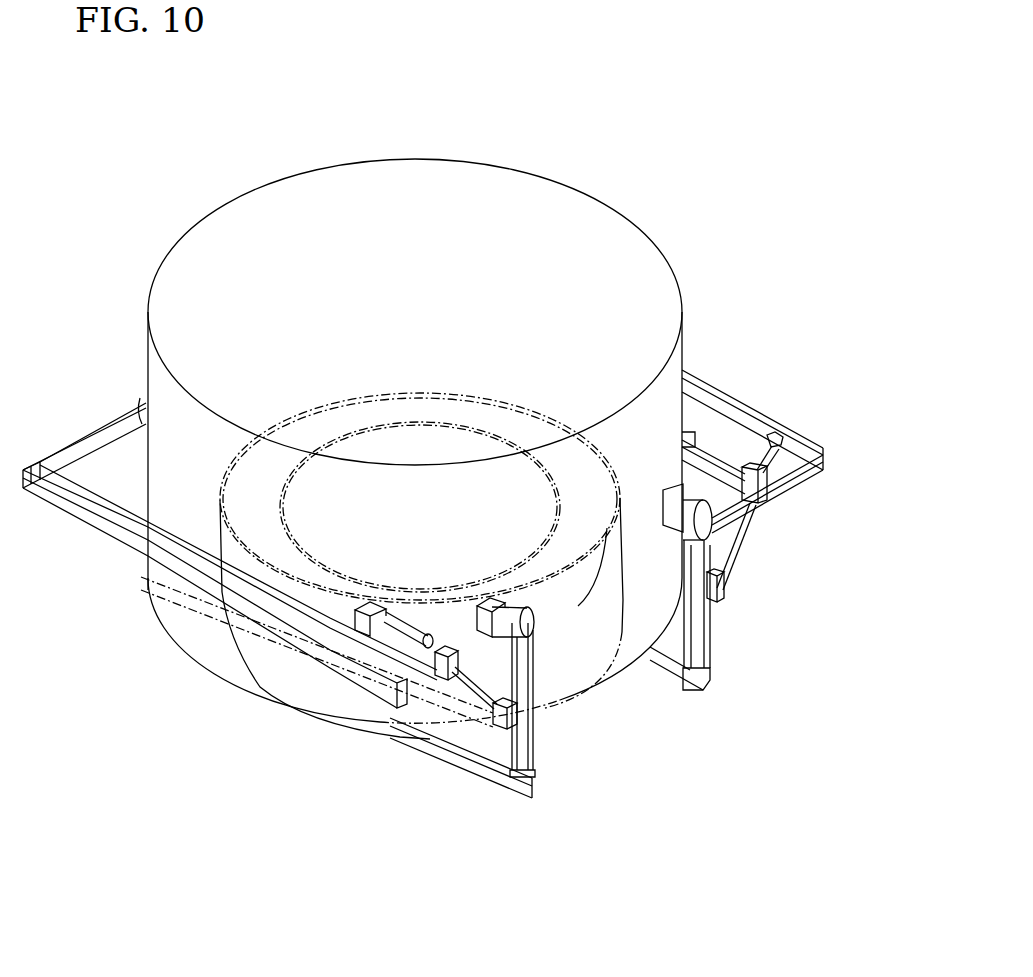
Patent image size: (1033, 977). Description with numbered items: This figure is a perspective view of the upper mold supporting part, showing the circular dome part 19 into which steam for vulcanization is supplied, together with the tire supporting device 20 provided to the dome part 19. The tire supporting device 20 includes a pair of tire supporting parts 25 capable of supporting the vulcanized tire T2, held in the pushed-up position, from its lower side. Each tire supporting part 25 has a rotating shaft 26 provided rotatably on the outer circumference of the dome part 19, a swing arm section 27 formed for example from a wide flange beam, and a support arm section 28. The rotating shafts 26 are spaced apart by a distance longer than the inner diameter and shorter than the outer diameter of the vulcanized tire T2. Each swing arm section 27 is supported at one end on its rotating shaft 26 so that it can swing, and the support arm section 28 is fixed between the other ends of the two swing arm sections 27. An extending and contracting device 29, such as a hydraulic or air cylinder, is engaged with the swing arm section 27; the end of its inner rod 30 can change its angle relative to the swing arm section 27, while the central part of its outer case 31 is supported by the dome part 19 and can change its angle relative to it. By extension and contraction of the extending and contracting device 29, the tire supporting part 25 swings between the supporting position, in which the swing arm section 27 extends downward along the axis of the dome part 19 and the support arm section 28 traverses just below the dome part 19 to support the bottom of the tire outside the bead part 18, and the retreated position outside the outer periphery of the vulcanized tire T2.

The bead part 18 is at (557, 517).
The circular dome part 19 is at (440, 160).
The vulcanized tire T2 is at (603, 668).
The tire supporting device 20 is at (459, 572).
The tire supporting part 25 is at (714, 546).
The rotating shaft 26 is at (140, 405).
The swing arm section 27 is at (78, 440).
The support arm section 28 is at (73, 510).
The extending and contracting device 29 is at (567, 577).
The inner rod 30 is at (775, 584).
The outer case 31 is at (770, 432).